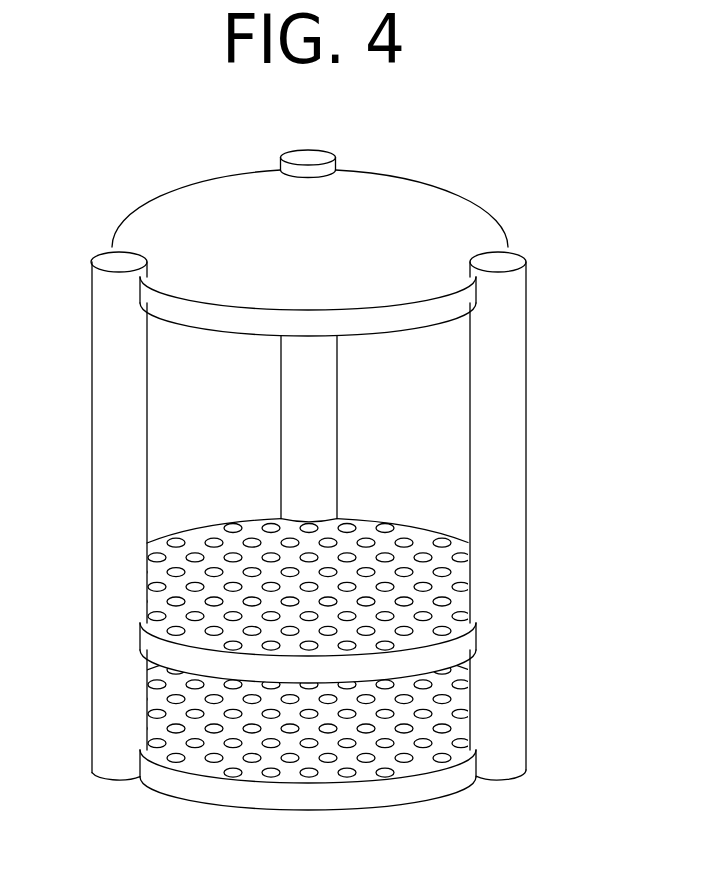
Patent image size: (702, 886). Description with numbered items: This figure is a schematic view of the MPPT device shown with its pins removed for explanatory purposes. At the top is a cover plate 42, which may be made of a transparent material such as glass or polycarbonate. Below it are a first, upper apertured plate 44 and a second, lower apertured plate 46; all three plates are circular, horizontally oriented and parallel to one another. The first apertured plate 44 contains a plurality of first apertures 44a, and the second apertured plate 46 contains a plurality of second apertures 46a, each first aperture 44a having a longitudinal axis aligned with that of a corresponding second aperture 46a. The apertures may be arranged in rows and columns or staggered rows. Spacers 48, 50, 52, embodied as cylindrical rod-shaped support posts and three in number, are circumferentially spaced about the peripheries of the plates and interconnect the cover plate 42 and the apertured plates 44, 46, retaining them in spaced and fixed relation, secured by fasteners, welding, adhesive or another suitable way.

The cover plate 42 is at (188, 198).
The first apertured plate 44 is at (163, 645).
The first apertures 44a is at (233, 527).
The second apertured plate 46 is at (162, 775).
The second apertures 46a is at (233, 775).
The spacer 48 is at (101, 363).
The spacer 50 is at (517, 363).
The spacer 52 is at (307, 157).